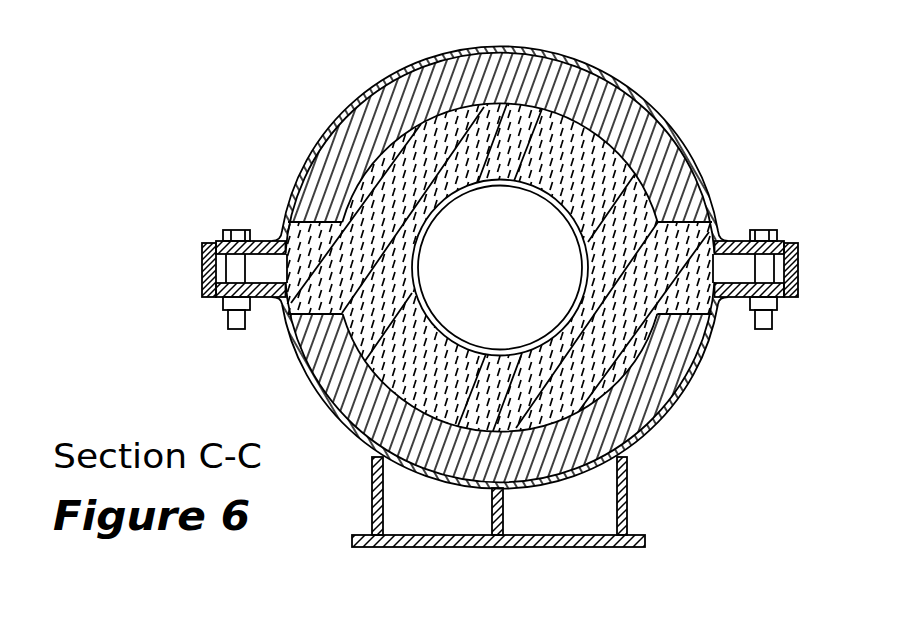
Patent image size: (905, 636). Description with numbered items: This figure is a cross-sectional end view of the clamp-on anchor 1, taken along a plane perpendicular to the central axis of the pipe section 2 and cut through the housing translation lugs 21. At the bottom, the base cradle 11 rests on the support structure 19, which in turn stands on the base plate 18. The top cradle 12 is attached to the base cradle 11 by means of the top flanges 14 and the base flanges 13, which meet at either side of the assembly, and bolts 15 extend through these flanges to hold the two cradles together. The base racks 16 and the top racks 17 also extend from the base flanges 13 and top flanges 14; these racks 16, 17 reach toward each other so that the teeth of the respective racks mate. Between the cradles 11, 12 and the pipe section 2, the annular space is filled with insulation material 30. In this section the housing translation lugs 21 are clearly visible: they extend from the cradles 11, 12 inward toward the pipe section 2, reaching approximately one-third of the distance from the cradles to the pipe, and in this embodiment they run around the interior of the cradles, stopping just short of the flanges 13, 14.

The anchor 1 is at (267, 112).
The pipe section 2 is at (445, 196).
The base cradle 11 is at (683, 397).
The top cradle 12 is at (569, 58).
The base flanges 13 is at (268, 300).
The top flanges 14 is at (257, 240).
The bolts 15 is at (236, 328).
The base racks 16 is at (203, 298).
The top racks 17 is at (205, 241).
The base plate 18 is at (650, 543).
The support structure 19 is at (627, 490).
The housing translation lugs 21 is at (676, 185).
The insulation material 30 is at (592, 148).